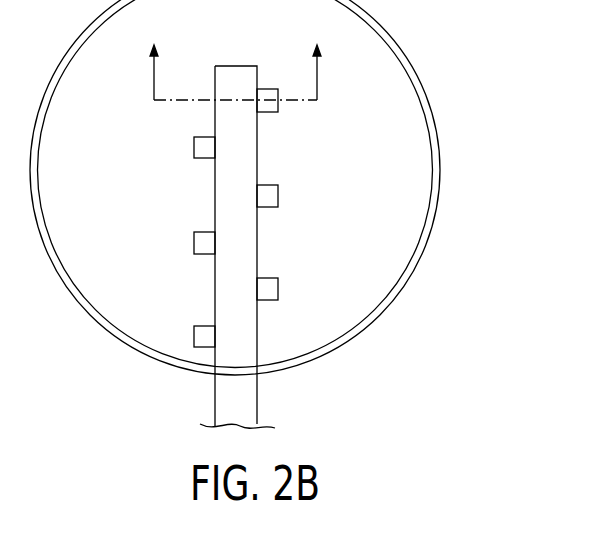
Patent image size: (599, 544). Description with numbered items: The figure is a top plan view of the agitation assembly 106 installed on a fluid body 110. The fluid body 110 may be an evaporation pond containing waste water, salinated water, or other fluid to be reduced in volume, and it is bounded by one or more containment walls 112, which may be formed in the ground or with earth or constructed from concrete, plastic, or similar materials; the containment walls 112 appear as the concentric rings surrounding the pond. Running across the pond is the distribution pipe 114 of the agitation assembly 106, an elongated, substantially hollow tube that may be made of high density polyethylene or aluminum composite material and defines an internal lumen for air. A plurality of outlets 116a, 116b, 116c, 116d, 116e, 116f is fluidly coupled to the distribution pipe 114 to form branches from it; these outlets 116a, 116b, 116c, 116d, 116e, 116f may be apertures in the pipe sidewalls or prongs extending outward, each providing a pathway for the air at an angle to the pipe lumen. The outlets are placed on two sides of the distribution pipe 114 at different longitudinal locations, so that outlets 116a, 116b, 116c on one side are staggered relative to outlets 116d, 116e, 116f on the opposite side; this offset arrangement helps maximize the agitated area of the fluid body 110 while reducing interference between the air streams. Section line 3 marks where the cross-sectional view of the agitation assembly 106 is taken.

The section line 3- 3 is at (236, 58).
The agitation assembly 106 is at (272, 165).
The fluid body 110 is at (380, 80).
The containment wall 112 is at (378, 313).
The distribution pipe 114 is at (240, 400).
The outlet 116a is at (268, 112).
The outlet 116b is at (278, 192).
The outlet 116c is at (278, 287).
The outlet 116d is at (194, 147).
The outlet 116e is at (194, 240).
The outlet 116f is at (194, 335).